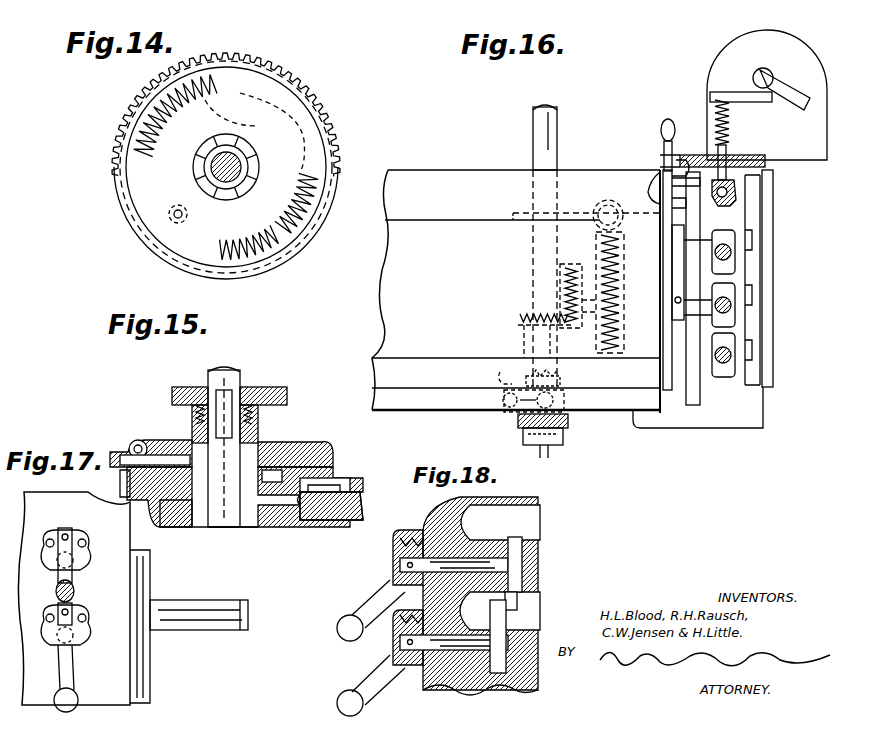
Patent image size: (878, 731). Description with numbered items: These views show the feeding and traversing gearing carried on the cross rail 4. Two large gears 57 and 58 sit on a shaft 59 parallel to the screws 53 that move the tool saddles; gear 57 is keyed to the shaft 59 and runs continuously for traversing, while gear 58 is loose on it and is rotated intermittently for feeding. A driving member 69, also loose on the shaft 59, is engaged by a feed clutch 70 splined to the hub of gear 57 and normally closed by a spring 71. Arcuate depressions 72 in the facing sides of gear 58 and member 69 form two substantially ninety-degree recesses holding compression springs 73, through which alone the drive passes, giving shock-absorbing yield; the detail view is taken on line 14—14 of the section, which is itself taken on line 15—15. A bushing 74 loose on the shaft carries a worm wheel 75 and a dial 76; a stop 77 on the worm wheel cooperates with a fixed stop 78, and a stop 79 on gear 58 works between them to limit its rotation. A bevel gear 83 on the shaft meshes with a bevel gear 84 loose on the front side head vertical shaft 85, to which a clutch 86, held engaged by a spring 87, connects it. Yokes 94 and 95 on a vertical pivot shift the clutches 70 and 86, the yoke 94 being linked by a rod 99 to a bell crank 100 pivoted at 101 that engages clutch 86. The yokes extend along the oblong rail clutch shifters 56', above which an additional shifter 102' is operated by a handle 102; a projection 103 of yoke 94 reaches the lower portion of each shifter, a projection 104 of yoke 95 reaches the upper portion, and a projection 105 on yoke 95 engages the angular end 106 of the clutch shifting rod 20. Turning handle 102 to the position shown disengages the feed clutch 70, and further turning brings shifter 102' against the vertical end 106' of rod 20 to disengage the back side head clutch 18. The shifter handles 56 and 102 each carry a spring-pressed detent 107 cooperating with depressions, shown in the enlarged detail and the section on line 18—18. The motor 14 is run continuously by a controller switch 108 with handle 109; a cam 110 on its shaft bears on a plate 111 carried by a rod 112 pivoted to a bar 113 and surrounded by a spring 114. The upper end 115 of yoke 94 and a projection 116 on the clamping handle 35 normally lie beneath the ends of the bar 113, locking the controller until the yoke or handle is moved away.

In FIG. 16, the frame 4 is at (413, 170).
In FIG. 15, the section line 14— 14 is at (176, 428).
In FIG. 14, the section line 15— 15 is at (112, 180).
In FIG. 17, the section line 18— 18 is at (66, 512).
In FIG. 16, the clutch shifting rod 20 is at (513, 213).
In FIG. 16, the clamping handle 35 is at (660, 132).
In FIG. 17, the threaded shafts or screws 53 is at (212, 632).
In FIG. 17, the operating handles 56 is at (92, 657).
In FIG. 18, the operating handles 56 is at (412, 675).
In FIG. 18, the rail clutch shifters 56' is at (520, 651).
In FIG. 16, the rail clutch shifters 56' is at (730, 377).
In FIG. 15, the gear 57 is at (288, 396).
In FIG. 14, the gear 58 is at (289, 74).
In FIG. 15, the gear 58 is at (363, 470).
In FIG. 14, the shaft 59 is at (211, 166).
In FIG. 15, the shaft 59 is at (233, 368).
In FIG. 16, the shaft 59 is at (622, 330).
In FIG. 14, the driving member 69 is at (300, 106).
In FIG. 15, the driving member 69 is at (333, 450).
In FIG. 15, the feed clutch 70 is at (260, 428).
In FIG. 15, the spring 71 is at (194, 412).
In FIG. 14, the arcuate depressions 72 is at (296, 162).
In FIG. 15, the arcuate depressions 72 is at (135, 440).
In FIG. 14, the compression springs 73 is at (212, 115).
In FIG. 15, the compression springs 73 is at (120, 440).
In FIG. 15, the bushing 74 is at (214, 530).
In FIG. 15, the worm wheel 75 is at (340, 506).
In FIG. 15, the dial 76 is at (262, 530).
In FIG. 15, the stop 77 is at (138, 500).
In FIG. 15, the fixed stop 78 is at (344, 492).
In FIG. 14, the stop 79 is at (176, 205).
In FIG. 15, the stop 79 is at (284, 526).
In FIG. 16, the bevel gear 83 is at (565, 272).
In FIG. 16, the bevel gear 84 is at (520, 316).
In FIG. 16, the front side head vertical shaft 85 is at (533, 128).
In FIG. 16, the clutch 86 is at (566, 398).
In FIG. 16, the spring 87 is at (566, 432).
In FIG. 16, the yoke 94 is at (773, 368).
In FIG. 16, the yoke 95 is at (693, 405).
In FIG. 16, the rod 99 is at (500, 372).
In FIG. 16, the bell crank 100 is at (505, 380).
In FIG. 16, the pivot 101 is at (500, 410).
In FIG. 17, the handle 102 is at (97, 565).
In FIG. 18, the handle 102 is at (417, 599).
In FIG. 18, the additional shifter 102' is at (548, 571).
In FIG. 16, the additional shifter 102' is at (770, 251).
In FIG. 16, the projection 103 is at (745, 305).
In FIG. 16, the projection 104 is at (672, 240).
In FIG. 16, the projection 105 is at (624, 215).
In FIG. 16, the angular end 106 is at (656, 280).
In FIG. 16, the vertical end 106' is at (635, 172).
In FIG. 17, the spring pressed detent 107 is at (58, 530).
In FIG. 18, the spring pressed detent 107 is at (414, 530).
In FIG. 16, the controller switch 108 is at (722, 56).
In FIG. 16, the controller handle 109 is at (790, 64).
In FIG. 16, the cam 110 is at (766, 70).
In FIG. 16, the plate 111 is at (728, 92).
In FIG. 16, the rod 112 is at (728, 150).
In FIG. 16, the bar 113 is at (768, 166).
In FIG. 16, the spring 114 is at (715, 112).
In FIG. 16, the upper end of yoke 94 115 is at (762, 190).
In FIG. 16, the projection 116 is at (684, 160).